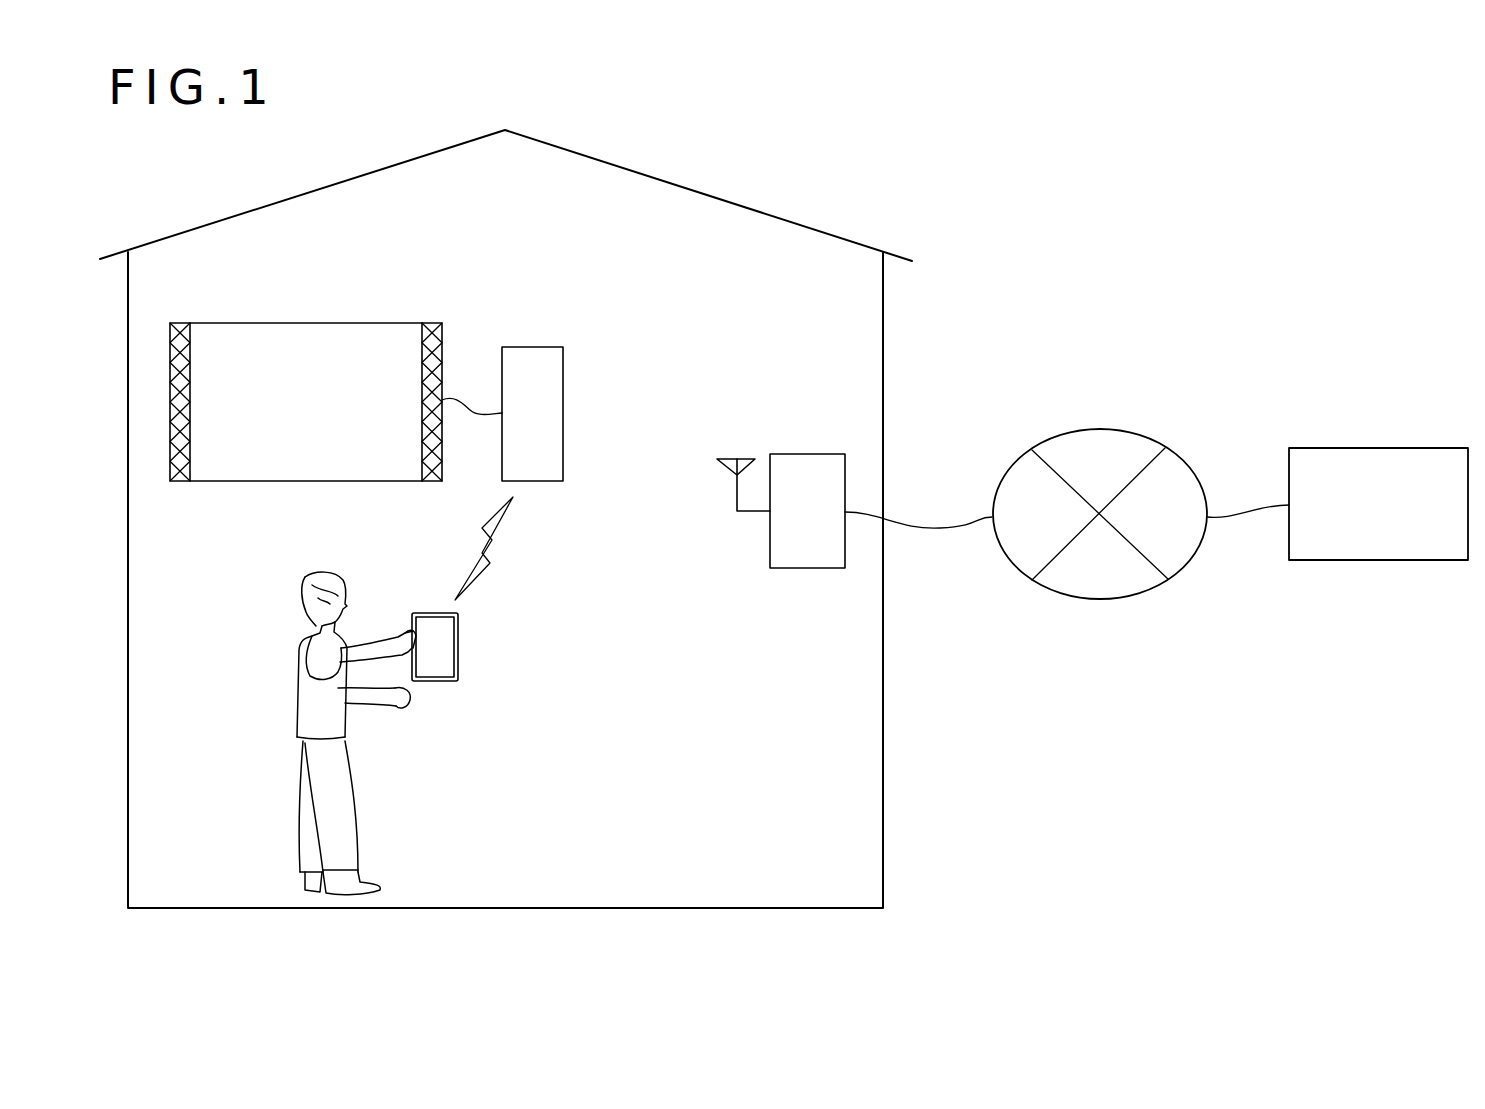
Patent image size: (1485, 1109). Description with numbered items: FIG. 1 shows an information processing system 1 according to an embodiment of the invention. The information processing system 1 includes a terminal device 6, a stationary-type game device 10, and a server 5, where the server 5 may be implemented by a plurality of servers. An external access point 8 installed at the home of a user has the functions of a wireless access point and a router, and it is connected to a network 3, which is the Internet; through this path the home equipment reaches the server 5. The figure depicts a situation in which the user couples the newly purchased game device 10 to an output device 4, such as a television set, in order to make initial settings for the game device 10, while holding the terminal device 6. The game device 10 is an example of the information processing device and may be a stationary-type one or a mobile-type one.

The information processing system 1 is at (792, 983).
The network 3 is at (1098, 430).
The output device 4 is at (305, 323).
The server 5 is at (1380, 448).
The terminal device 6 is at (458, 648).
The external access point 8 is at (808, 454).
The stationary-type game device 10 is at (532, 348).